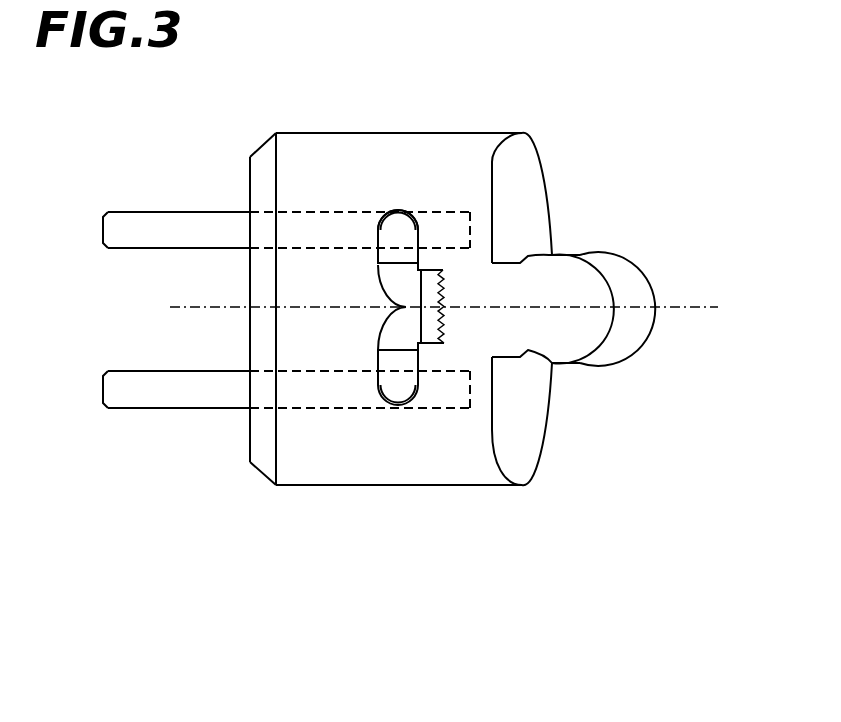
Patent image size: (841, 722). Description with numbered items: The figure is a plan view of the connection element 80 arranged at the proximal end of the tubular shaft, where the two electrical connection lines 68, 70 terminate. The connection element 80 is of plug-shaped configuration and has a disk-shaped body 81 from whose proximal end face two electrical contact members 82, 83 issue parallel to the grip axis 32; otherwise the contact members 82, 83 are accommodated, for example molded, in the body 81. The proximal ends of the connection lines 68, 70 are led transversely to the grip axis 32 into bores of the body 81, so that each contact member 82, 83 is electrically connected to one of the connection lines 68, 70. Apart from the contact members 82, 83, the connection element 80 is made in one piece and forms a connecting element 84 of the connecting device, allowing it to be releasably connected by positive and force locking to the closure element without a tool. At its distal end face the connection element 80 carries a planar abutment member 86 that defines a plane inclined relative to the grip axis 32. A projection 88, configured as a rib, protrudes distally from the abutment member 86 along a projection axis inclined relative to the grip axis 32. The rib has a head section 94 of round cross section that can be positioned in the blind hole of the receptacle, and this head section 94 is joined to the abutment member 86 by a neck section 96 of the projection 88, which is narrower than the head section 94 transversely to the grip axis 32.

The grip axis 32 is at (692, 300).
The connection line 68 is at (398, 342).
The connection line 70 is at (395, 227).
The connection element 80 is at (447, 157).
The body 81 is at (353, 460).
The electrical contact member 82 is at (168, 393).
The electrical contact member 83 is at (170, 233).
The connecting element 84 is at (407, 158).
The abutment member 86 is at (523, 415).
The projection 88 is at (612, 277).
The head section 94 is at (578, 332).
The neck section 96 is at (507, 292).